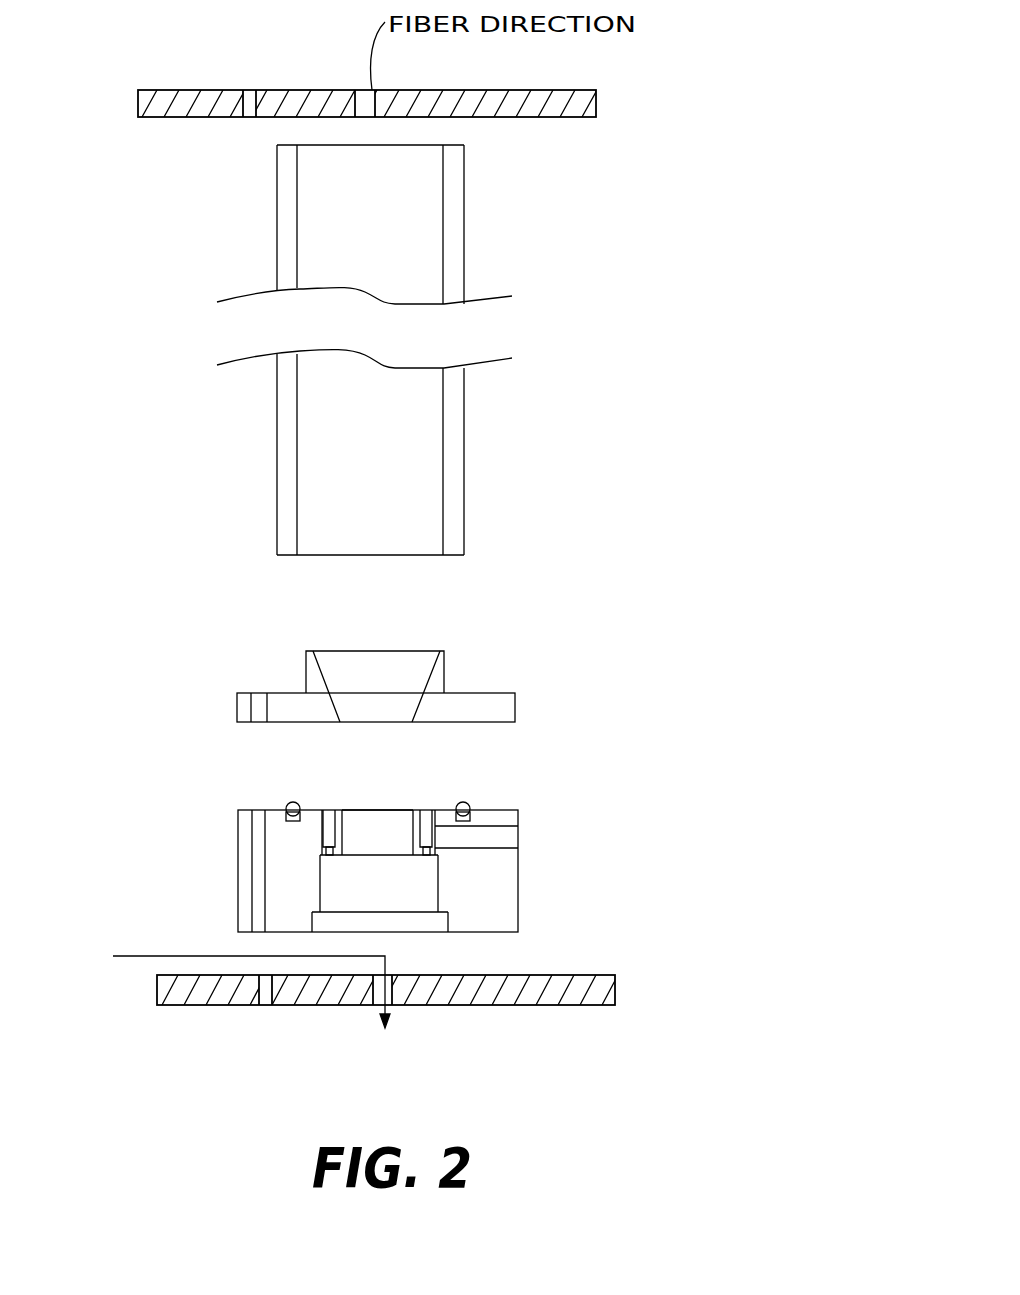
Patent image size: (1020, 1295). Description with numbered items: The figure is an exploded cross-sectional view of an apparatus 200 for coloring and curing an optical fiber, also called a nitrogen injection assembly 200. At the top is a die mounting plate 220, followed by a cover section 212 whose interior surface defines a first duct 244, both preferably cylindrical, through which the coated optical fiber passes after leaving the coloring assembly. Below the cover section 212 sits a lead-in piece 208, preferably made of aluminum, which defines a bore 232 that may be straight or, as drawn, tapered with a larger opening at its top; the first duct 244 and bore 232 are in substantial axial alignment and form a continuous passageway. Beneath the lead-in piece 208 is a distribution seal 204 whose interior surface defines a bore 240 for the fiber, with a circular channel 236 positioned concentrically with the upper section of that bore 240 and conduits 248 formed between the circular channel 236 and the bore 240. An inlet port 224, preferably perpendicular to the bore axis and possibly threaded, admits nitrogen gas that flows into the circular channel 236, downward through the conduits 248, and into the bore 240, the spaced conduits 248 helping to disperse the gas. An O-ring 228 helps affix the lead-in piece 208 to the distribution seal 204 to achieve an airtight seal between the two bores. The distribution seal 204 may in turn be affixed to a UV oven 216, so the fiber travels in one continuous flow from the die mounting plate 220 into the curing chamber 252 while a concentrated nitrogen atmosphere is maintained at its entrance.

The apparatus 200 is at (742, 872).
The distribution seal 204 is at (238, 875).
The lead-in piece 208 is at (515, 695).
The cover section 212 is at (464, 430).
The UV oven 216 is at (615, 985).
The die mounting plate 220 is at (596, 118).
The inlet port 224 is at (518, 838).
The O-ring 228 is at (463, 815).
The bore 232 is at (405, 670).
The circular channel 236 is at (428, 822).
The bore 240 is at (373, 837).
The first duct 244 is at (413, 245).
The conduits 248 is at (330, 857).
The curing chamber 252 is at (225, 986).